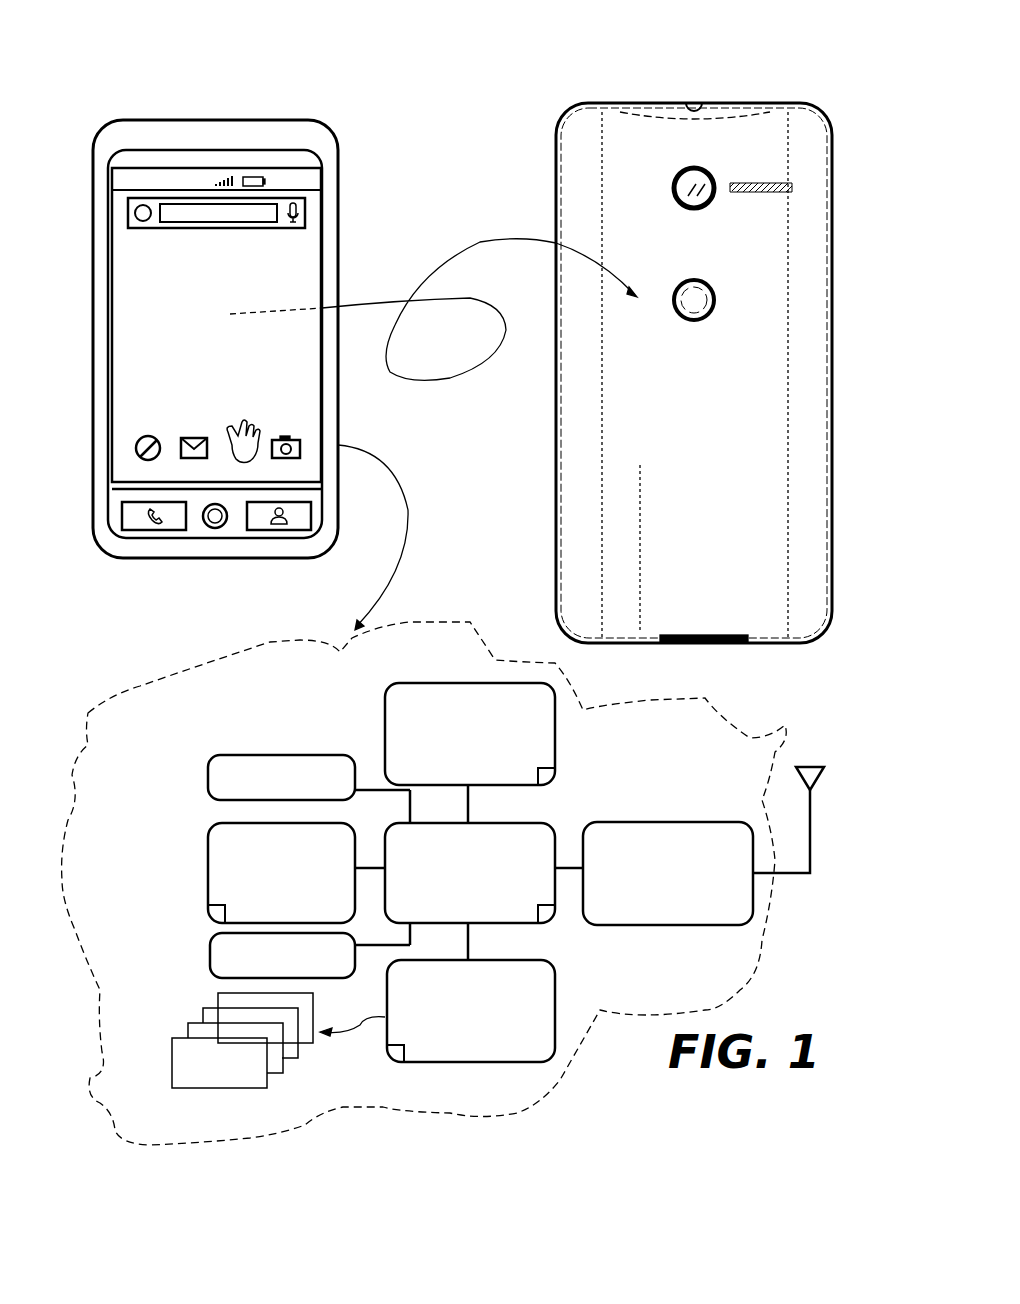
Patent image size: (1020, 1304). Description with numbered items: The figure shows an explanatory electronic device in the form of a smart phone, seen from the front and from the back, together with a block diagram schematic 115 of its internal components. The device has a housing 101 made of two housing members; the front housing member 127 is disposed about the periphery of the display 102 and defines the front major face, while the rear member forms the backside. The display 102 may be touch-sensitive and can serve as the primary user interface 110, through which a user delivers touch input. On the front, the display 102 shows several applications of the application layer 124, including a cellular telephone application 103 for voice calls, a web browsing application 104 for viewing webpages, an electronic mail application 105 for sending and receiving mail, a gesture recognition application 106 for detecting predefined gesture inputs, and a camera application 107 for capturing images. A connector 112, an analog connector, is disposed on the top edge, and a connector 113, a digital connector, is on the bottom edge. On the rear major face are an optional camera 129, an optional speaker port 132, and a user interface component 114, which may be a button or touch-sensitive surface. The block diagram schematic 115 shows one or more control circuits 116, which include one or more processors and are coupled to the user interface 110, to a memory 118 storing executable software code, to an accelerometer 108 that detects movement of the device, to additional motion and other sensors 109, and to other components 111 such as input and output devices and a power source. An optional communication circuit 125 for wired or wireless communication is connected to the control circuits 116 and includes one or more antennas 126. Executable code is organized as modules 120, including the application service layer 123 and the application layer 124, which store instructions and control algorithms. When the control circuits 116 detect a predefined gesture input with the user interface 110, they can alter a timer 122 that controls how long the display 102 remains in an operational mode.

The housing 101 is at (305, 120).
The display 102 is at (150, 348).
The cellular telephone application 103 is at (145, 535).
The web browsing application 104 is at (150, 434).
The electronic mail application 105 is at (195, 437).
The gesture recognition application 106 is at (242, 422).
The camera application 107 is at (288, 437).
The accelerometer 108 is at (255, 755).
The additional motion and other sensors 109 is at (210, 947).
The primary user interface 110 is at (385, 718).
The other components 111 is at (208, 852).
The connector 112 is at (696, 100).
The connector 113 is at (705, 646).
The user interface component 114 is at (712, 310).
The block diagram schematic 115 is at (762, 740).
The control circuits 116 is at (560, 828).
The memory 118 is at (555, 1005).
The modules 120 is at (258, 1047).
The timer 122 is at (545, 912).
The application service layer 123 is at (280, 1073).
The application layer 124 is at (207, 1088).
The communication circuit 125 is at (655, 822).
The antennas 126 is at (808, 765).
The front housing member 127 is at (330, 270).
The camera 129 is at (680, 180).
The speaker port 132 is at (735, 185).